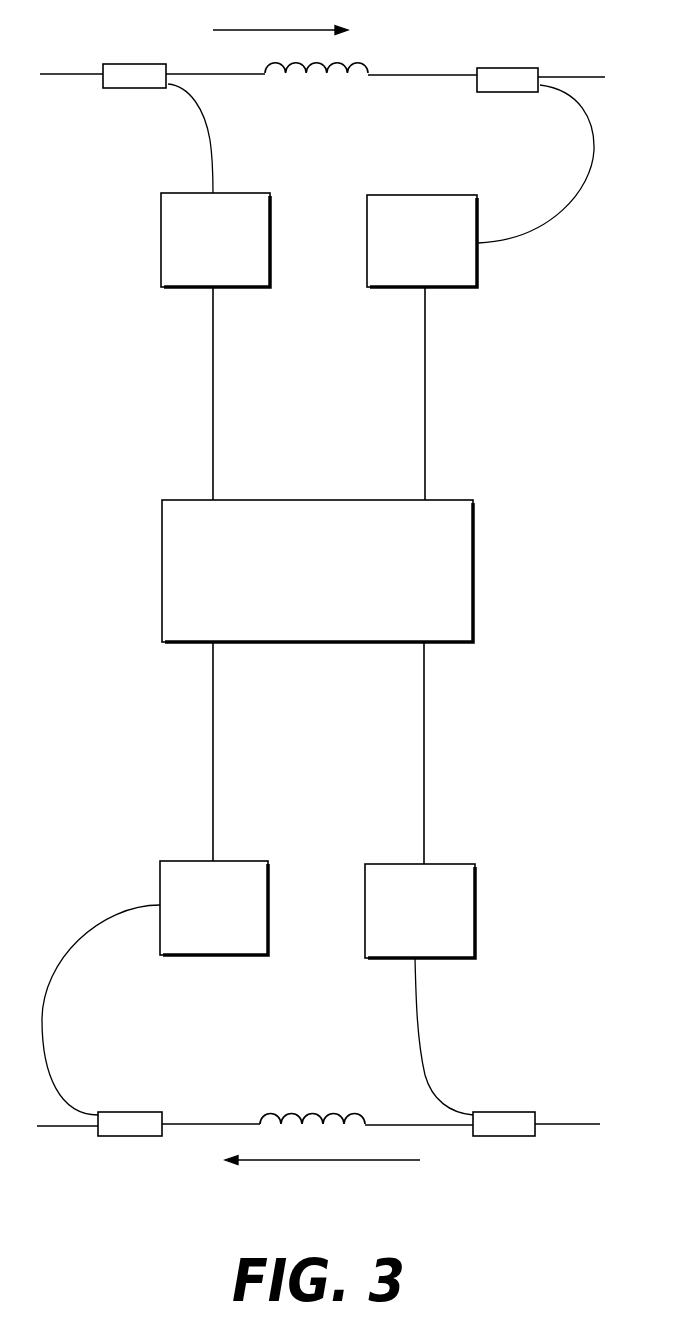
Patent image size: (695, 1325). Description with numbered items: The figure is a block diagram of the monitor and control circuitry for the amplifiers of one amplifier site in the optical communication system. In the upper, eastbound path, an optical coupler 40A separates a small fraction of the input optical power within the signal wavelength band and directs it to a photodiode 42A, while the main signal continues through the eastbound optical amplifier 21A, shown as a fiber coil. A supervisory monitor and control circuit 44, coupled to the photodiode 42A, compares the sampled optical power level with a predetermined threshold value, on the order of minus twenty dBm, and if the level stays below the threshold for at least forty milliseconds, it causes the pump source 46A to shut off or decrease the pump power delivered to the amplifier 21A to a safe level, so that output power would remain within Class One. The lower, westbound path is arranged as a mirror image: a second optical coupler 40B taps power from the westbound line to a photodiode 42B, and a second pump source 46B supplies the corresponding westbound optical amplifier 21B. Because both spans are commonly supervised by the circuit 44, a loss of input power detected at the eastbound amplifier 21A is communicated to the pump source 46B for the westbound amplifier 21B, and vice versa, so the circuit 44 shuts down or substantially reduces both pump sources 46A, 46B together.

The optical coupler 40A is at (120, 64).
The eastbound optical amplifier 21A is at (365, 62).
The photodiode 42A is at (162, 240).
The pump source 46A is at (414, 195).
The monitor and control circuit 44 is at (332, 500).
The pump source 46B is at (160, 880).
The photodiode 42B is at (478, 877).
The westbound optical amplifier 21B is at (303, 1112).
The optical coupler 40B is at (493, 1112).